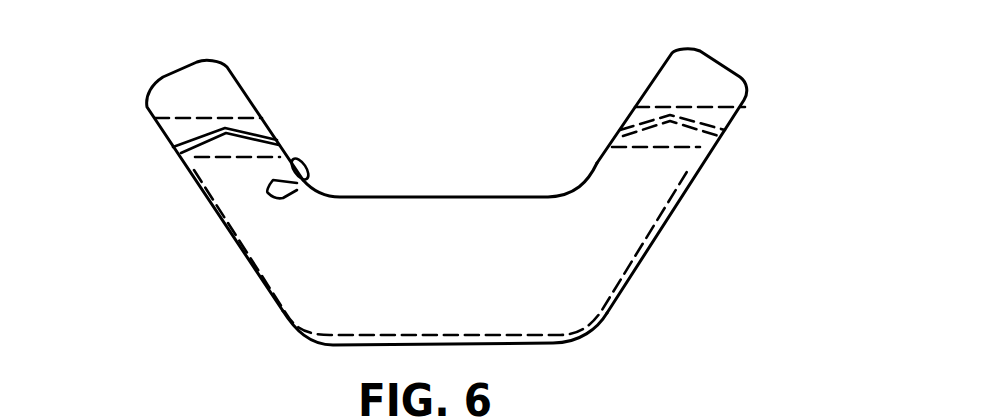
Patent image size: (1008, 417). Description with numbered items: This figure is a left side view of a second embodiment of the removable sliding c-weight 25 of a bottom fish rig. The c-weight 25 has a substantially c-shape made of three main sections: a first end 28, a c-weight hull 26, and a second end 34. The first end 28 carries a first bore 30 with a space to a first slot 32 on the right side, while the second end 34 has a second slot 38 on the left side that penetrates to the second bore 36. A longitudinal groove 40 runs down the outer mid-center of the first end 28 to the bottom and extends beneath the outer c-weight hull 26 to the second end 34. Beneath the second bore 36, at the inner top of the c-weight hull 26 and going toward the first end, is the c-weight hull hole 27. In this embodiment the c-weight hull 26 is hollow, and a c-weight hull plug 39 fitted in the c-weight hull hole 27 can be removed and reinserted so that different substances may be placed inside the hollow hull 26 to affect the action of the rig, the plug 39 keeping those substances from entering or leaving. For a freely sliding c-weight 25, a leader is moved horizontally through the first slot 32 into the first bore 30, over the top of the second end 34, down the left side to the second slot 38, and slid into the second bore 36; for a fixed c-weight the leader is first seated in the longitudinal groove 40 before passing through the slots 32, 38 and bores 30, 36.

The removable sliding c-weight 25 is at (484, 107).
The c-weight hull 26 is at (462, 277).
The c-weight hull hole 27 is at (308, 182).
The first end 28 is at (718, 62).
The first bore 30 is at (737, 118).
The first slot 32 is at (708, 134).
The second end 34 is at (172, 75).
The second bore 36 is at (263, 118).
The second slot 38 is at (176, 152).
The c-weight hull plug 39 is at (314, 165).
The longitudinal groove 40 is at (273, 302).